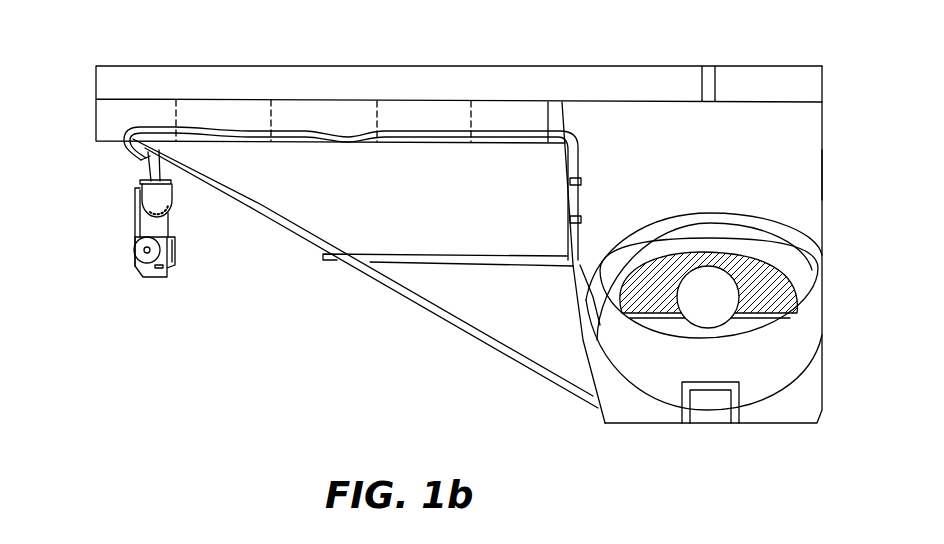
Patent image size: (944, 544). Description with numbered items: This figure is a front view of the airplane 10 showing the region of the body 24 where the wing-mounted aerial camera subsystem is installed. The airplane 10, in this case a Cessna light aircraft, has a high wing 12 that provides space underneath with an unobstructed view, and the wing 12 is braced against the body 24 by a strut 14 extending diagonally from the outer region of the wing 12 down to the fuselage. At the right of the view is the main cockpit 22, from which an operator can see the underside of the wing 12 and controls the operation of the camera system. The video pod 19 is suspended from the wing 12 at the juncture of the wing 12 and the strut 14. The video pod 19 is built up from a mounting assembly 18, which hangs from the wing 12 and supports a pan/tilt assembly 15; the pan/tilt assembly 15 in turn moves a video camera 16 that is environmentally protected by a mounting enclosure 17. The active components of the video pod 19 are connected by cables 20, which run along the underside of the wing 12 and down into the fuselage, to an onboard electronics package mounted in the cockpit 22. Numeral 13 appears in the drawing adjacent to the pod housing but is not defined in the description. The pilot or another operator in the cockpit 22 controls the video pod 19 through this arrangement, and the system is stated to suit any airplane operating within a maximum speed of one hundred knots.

The airplane 10 is at (848, 157).
The wing 12 is at (308, 113).
The lamp housing 13 is at (126, 246).
The strut 14 is at (482, 342).
The pan/tilt assembly 15 is at (170, 200).
The video camera 16 is at (148, 264).
The mounting enclosure 17 is at (173, 264).
The mounting assembly 18 is at (142, 160).
The video pod 19 is at (126, 202).
The cables 20 is at (403, 138).
The cockpit 22 is at (812, 197).
The body 24 is at (607, 402).